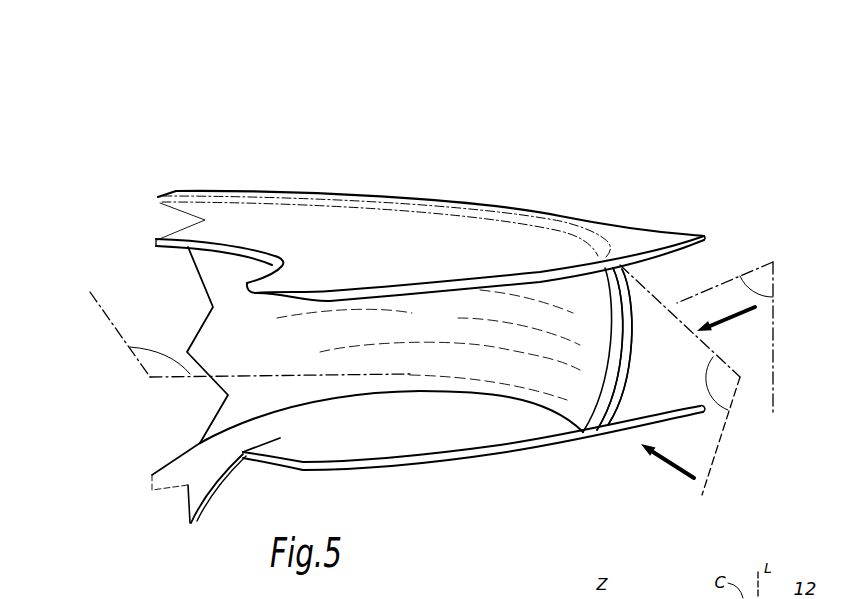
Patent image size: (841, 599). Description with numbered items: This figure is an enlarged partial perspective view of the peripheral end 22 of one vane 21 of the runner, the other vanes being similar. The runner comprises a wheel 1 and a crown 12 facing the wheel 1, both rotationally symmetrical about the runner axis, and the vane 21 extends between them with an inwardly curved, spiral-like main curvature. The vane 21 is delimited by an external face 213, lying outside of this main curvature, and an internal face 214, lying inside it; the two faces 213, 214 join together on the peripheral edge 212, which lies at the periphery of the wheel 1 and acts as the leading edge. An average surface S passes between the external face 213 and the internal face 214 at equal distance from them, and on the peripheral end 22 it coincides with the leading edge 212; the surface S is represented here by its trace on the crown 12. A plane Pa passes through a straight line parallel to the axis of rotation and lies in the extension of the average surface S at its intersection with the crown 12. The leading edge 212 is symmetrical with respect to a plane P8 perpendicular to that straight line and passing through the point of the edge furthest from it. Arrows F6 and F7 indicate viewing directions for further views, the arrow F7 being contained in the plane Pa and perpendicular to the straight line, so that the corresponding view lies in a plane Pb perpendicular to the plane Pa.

The wheel 1 is at (417, 430).
The crown 12 is at (247, 222).
The vane 21 is at (278, 388).
The peripheral end 22 is at (598, 228).
The peripheral edge 212 is at (621, 347).
The external face 213 is at (604, 372).
The internal face 214 is at (428, 345).
The average surface S is at (480, 210).
The plane P8 is at (250, 334).
The plane Pa is at (680, 380).
The plane Pb is at (725, 337).
The arrow F6 is at (726, 313).
The arrow F7 is at (668, 459).